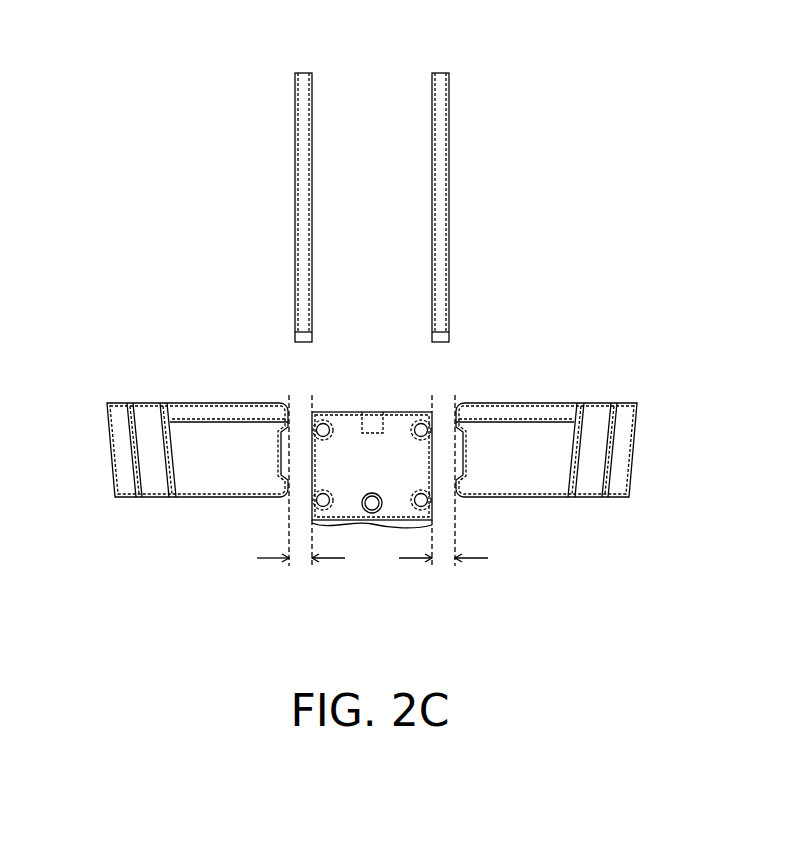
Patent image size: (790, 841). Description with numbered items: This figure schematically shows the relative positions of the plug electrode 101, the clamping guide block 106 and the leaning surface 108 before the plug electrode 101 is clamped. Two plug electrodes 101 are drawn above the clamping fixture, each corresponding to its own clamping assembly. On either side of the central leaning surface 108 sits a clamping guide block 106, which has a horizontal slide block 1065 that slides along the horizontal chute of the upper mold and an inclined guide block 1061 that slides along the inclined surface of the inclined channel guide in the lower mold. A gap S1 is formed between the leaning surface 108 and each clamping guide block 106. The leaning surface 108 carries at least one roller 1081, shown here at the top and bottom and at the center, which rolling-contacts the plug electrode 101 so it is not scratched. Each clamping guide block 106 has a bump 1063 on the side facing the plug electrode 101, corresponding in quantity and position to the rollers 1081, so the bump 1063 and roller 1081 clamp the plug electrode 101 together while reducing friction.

The plug electrode 101 is at (307, 72).
The clamping guide block 106 is at (223, 497).
The inclined guide block 1061 is at (109, 450).
The bump 1063 is at (291, 405).
The horizontal slide block 1065 is at (216, 412).
The leaning surface 108 is at (309, 482).
The roller 1081 is at (340, 428).
The gap S1 is at (372, 573).